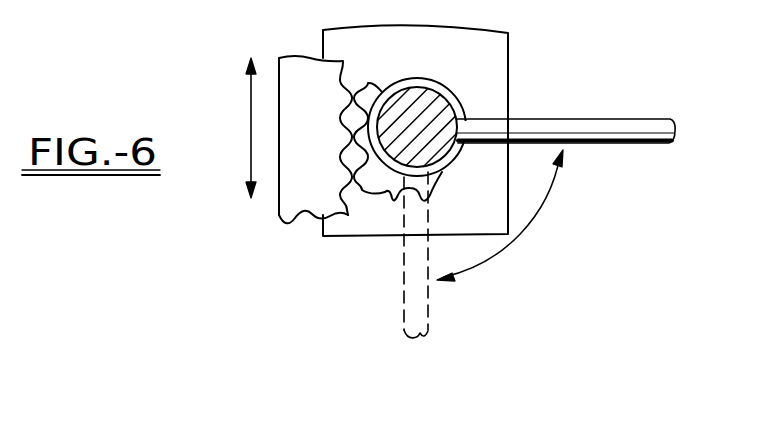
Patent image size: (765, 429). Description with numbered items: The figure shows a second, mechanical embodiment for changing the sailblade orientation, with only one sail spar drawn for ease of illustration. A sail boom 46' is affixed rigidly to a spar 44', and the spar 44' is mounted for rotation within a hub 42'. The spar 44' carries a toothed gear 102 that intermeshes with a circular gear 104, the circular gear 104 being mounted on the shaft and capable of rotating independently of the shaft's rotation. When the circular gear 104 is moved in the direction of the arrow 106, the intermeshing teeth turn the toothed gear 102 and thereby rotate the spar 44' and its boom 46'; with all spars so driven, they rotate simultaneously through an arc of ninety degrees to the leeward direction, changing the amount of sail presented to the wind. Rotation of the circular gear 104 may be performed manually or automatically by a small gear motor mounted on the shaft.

The hub 42' is at (440, 119).
The spar 44' is at (467, 111).
The sail boom 46' is at (565, 108).
The toothed gear 102 is at (394, 183).
The circular gear 104 is at (310, 203).
The arrow 106 is at (252, 166).